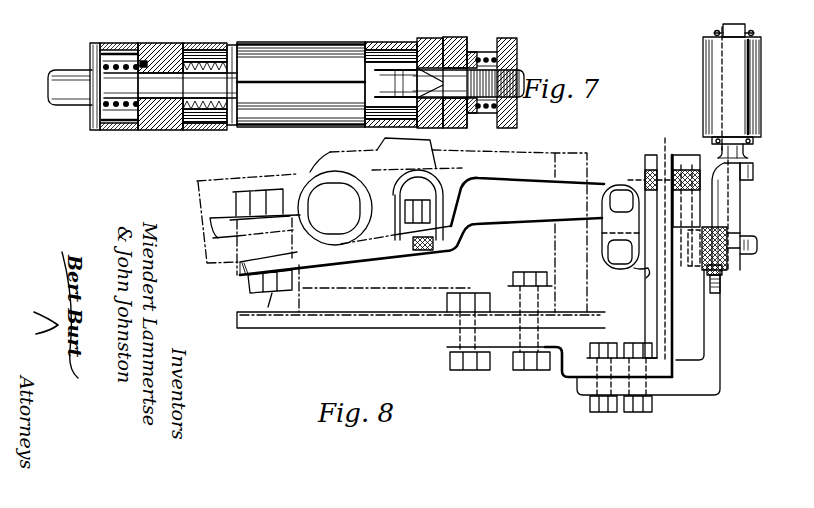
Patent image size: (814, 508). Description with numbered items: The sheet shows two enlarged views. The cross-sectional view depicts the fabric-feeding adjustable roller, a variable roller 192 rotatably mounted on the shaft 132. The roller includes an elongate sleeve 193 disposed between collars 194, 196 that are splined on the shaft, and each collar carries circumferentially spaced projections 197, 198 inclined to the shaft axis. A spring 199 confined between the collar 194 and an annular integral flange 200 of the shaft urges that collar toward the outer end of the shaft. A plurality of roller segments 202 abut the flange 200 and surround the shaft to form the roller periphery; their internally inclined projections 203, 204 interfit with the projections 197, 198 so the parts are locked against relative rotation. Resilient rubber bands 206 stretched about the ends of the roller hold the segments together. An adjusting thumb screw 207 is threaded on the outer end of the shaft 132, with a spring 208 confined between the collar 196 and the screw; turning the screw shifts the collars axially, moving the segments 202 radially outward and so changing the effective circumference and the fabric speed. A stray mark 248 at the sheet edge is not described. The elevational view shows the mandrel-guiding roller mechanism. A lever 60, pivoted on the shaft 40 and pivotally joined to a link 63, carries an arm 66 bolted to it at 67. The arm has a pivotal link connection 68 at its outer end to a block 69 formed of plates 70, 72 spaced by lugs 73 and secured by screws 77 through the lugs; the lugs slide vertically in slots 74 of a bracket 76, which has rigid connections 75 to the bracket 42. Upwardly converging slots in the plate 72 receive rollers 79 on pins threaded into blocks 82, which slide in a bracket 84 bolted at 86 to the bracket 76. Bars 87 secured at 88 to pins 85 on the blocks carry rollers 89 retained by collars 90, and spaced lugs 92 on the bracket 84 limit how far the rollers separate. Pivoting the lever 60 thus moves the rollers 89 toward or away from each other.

In FIG. 7, the shaft 132 is at (70, 106).
In FIG. 7, the annular integral flange 200 is at (90, 52).
In FIG. 7, the resilient bands 206 is at (112, 43).
In FIG. 7, the spring 199 is at (104, 106).
In FIG. 7, the internally inclined projections 203 is at (144, 61).
In FIG. 7, the collar 194 is at (184, 64).
In FIG. 7, the projections 197 is at (196, 52).
In FIG. 7, the elongate sleeve 193 is at (230, 50).
In FIG. 7, the variable roller 192 is at (315, 32).
In FIG. 7, the roller segments 202 is at (382, 44).
In FIG. 7, the internally inclined projections 204 is at (422, 38).
In FIG. 7, the collar 196 is at (452, 38).
In FIG. 7, the projections 198 is at (470, 52).
In FIG. 7, the adjusting thumb screw 207 is at (517, 48).
In FIG. 7, the spring 208 is at (478, 118).
In FIG. 7, the reference 248 is at (600, 7).
In FIG. 8, the rollers 89 is at (760, 100).
In FIG. 8, the collars 90 is at (752, 34).
In FIG. 8, the screws 77 is at (742, 160).
In FIG. 8, the bars 87 is at (742, 196).
In FIG. 8, the spaced lugs 92 is at (755, 171).
In FIG. 8, the securing connections 88 is at (744, 232).
In FIG. 8, the pins 85 is at (759, 246).
In FIG. 8, the blocks 82 is at (724, 286).
In FIG. 8, the plate 70 is at (647, 154).
In FIG. 8, the lugs 73 is at (656, 239).
In FIG. 8, the plate 72 is at (692, 154).
In FIG. 8, the slots 74 is at (654, 179).
In FIG. 8, the rollers 79 is at (696, 270).
In FIG. 8, the bracket 76 is at (680, 302).
In FIG. 8, the bracket 84 is at (722, 334).
In FIG. 8, the bolts 86 is at (638, 428).
In FIG. 8, the pivotal link connection 68 is at (603, 234).
In FIG. 8, the block 69 is at (647, 274).
In FIG. 8, the arm 66 is at (490, 221).
In FIG. 8, the shaft 40 is at (337, 232).
In FIG. 8, the lever 60 is at (203, 190).
In FIG. 8, the bolts 67 is at (268, 307).
In FIG. 8, the link 63 is at (420, 158).
In FIG. 8, the bracket 42 is at (374, 312).
In FIG. 8, the rigid connections 75 is at (532, 388).